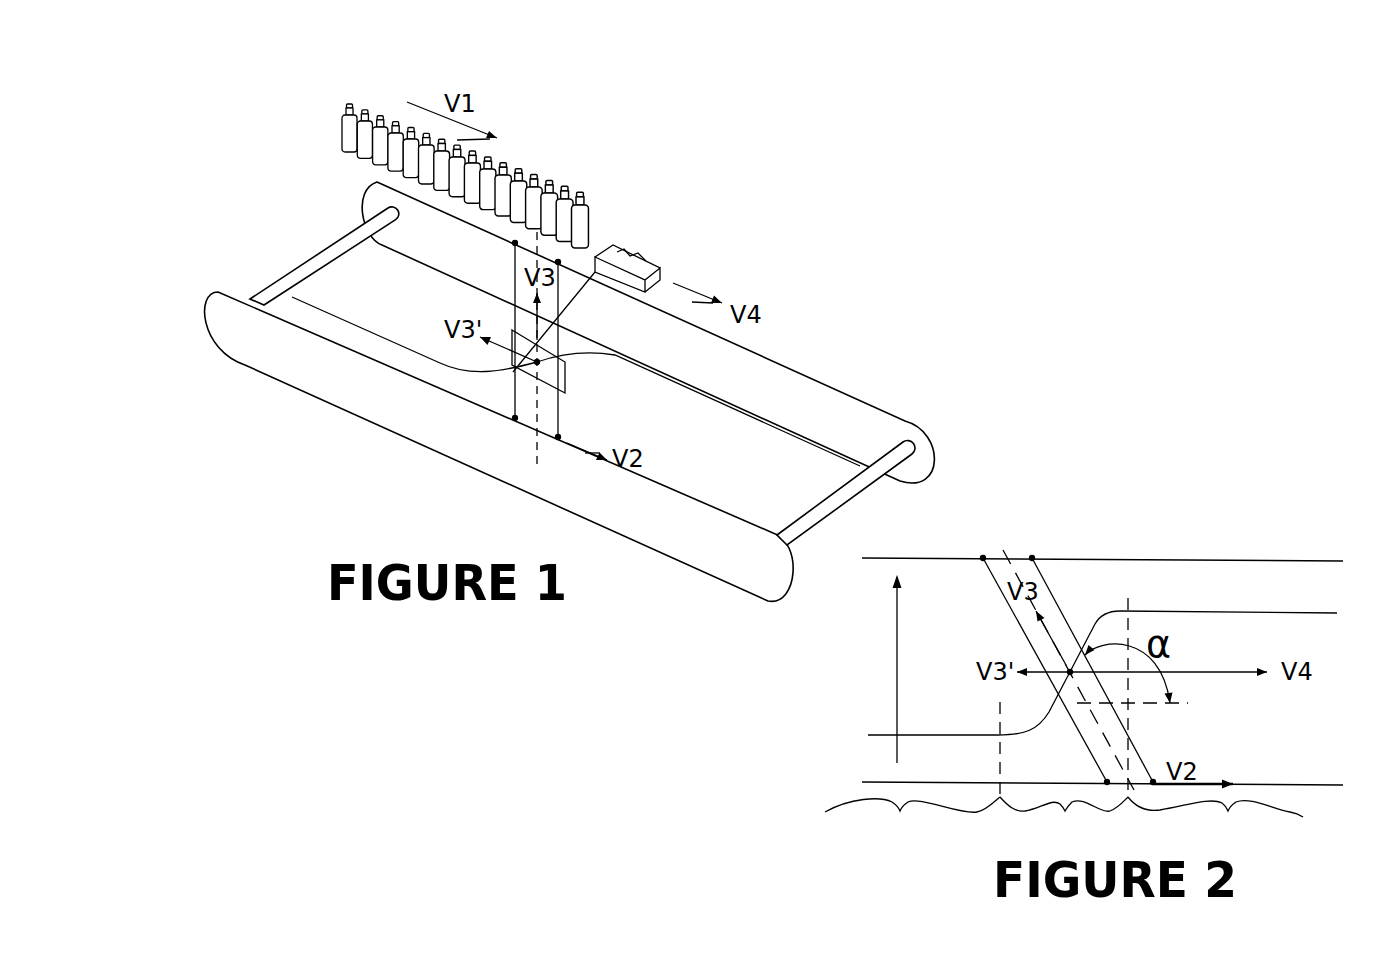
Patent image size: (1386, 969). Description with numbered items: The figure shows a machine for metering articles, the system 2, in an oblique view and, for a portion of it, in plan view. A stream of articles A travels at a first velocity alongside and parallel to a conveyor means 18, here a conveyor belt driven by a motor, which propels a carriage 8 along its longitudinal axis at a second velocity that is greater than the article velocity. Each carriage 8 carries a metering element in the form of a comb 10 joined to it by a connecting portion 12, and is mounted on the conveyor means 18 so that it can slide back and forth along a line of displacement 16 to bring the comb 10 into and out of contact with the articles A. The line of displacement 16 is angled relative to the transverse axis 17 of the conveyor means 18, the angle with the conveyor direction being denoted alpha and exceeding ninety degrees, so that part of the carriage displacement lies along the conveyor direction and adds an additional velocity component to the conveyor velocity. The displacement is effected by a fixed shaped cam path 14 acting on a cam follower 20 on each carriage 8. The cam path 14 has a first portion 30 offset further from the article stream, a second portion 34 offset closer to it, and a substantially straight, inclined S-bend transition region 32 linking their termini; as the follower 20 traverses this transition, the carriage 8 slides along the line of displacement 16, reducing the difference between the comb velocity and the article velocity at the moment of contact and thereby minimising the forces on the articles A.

In FIG. 1, the system 2 is at (573, 391).
In FIG. 2, the carriage 8 is at (1053, 660).
In FIG. 1, the comb 10 is at (616, 254).
In FIG. 1, the connecting portion 12 is at (586, 294).
In FIG. 1, the shaped cam path 14 is at (577, 348).
In FIG. 2, the shaped cam path 14 is at (1092, 625).
In FIG. 1, the line of displacement 16 is at (537, 460).
In FIG. 2, the line of displacement 16 is at (988, 525).
In FIG. 2, the transverse axis 17 is at (897, 705).
In FIG. 1, the conveyor means 18 is at (834, 377).
In FIG. 2, the conveyor means 18 is at (1160, 558).
In FIG. 1, the cam follower 20 is at (537, 362).
In FIG. 2, the first portion 30 is at (912, 820).
In FIG. 2, the transition region 32 is at (1064, 820).
In FIG. 2, the second portion 34 is at (1215, 820).
In FIG. 1, the articles A is at (540, 173).